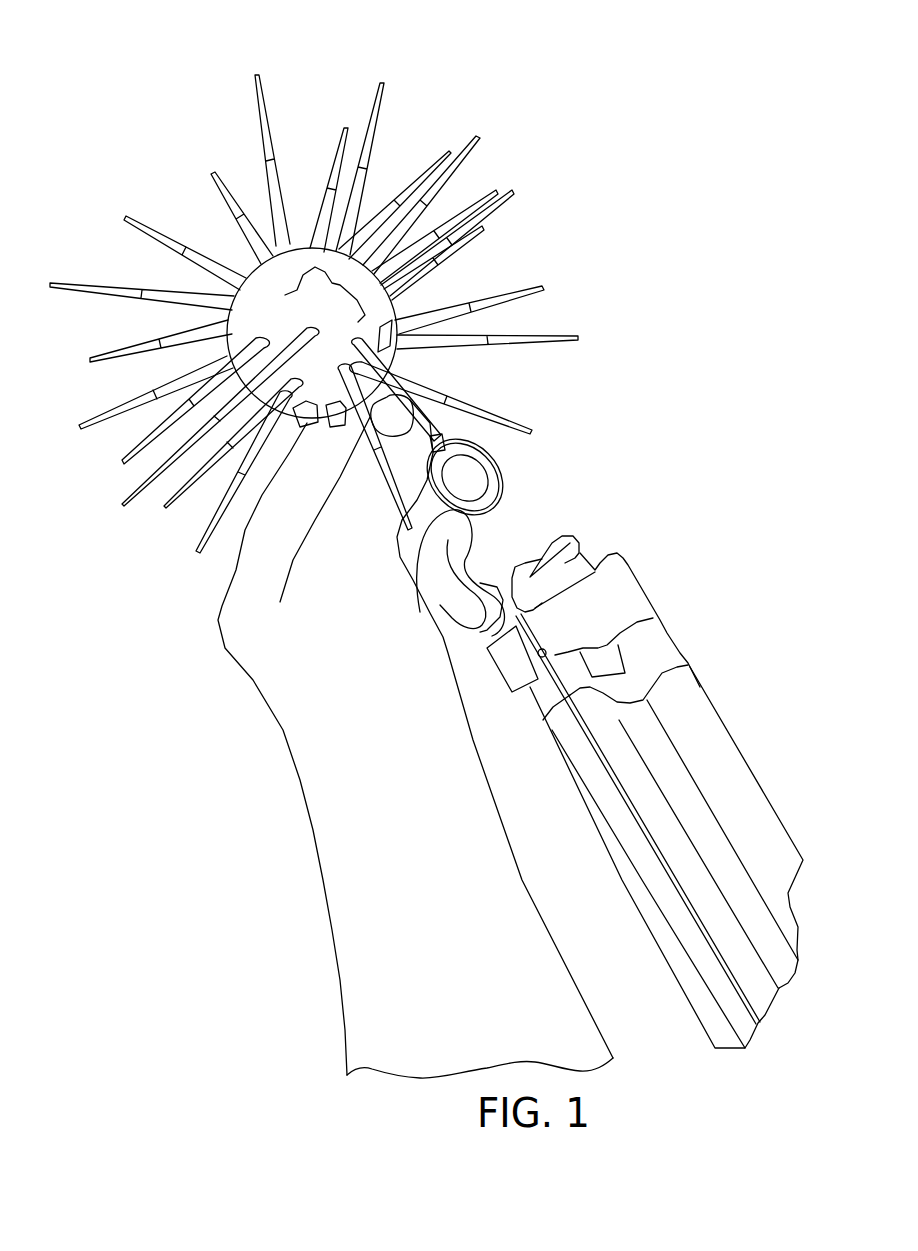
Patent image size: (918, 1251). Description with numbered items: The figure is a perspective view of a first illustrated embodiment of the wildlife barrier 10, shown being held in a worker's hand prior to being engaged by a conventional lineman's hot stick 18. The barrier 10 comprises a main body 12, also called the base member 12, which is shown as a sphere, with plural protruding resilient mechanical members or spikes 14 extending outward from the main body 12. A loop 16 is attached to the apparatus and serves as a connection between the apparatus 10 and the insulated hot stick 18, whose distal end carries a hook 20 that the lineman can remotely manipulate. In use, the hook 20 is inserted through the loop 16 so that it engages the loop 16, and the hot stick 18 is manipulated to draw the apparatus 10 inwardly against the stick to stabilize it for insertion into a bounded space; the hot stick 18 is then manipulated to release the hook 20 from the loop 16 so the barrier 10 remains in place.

The wildlife barrier 10 is at (496, 167).
The main body 12 is at (237, 292).
The spikes 14 is at (266, 120).
The loop 16 is at (503, 471).
The hot stick 18 is at (724, 686).
The hook 20 is at (455, 568).